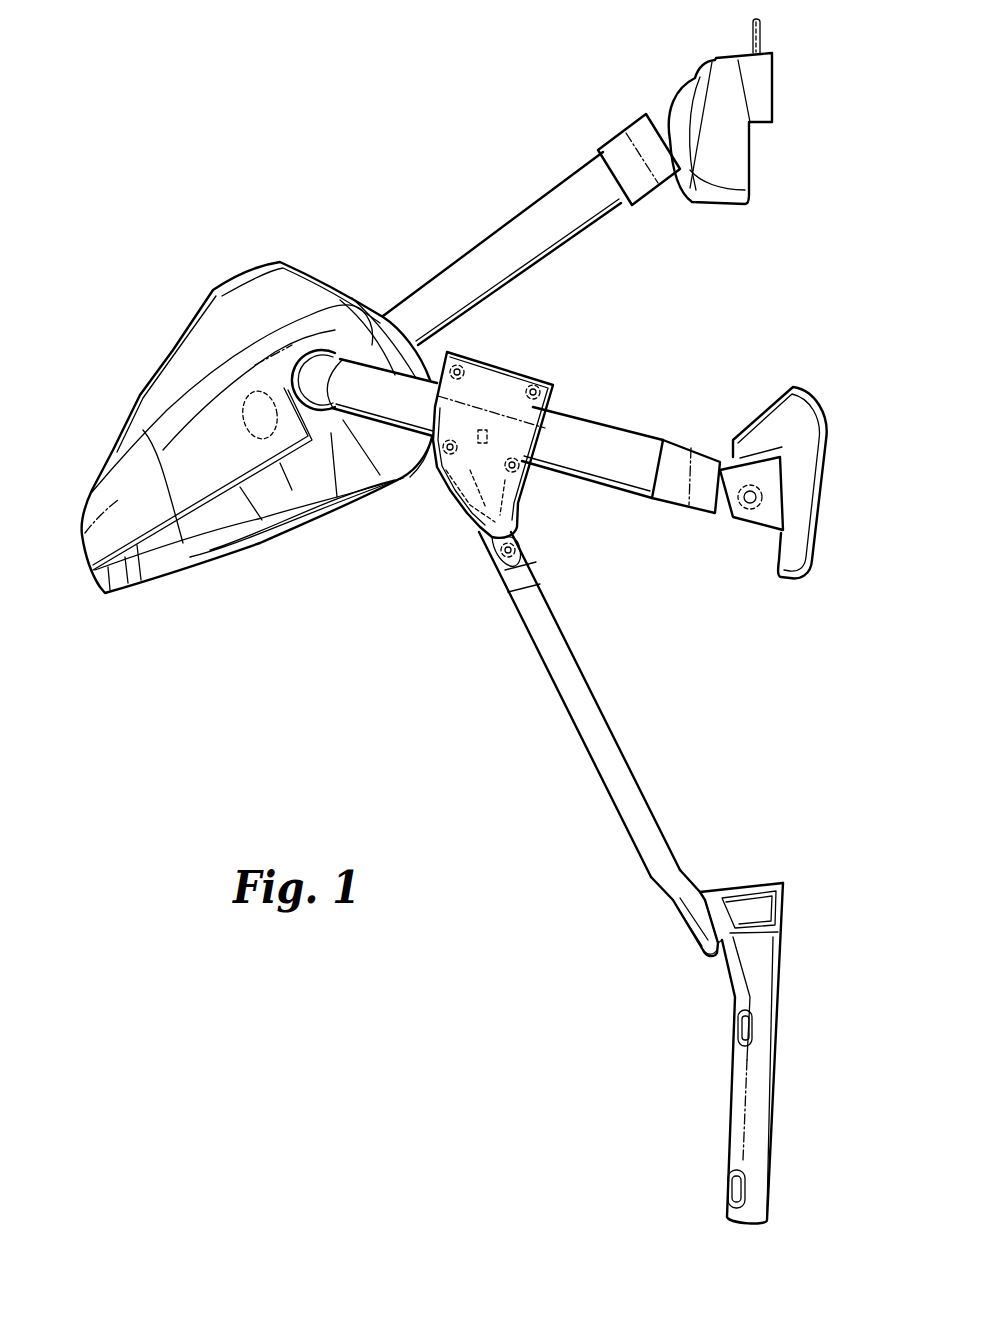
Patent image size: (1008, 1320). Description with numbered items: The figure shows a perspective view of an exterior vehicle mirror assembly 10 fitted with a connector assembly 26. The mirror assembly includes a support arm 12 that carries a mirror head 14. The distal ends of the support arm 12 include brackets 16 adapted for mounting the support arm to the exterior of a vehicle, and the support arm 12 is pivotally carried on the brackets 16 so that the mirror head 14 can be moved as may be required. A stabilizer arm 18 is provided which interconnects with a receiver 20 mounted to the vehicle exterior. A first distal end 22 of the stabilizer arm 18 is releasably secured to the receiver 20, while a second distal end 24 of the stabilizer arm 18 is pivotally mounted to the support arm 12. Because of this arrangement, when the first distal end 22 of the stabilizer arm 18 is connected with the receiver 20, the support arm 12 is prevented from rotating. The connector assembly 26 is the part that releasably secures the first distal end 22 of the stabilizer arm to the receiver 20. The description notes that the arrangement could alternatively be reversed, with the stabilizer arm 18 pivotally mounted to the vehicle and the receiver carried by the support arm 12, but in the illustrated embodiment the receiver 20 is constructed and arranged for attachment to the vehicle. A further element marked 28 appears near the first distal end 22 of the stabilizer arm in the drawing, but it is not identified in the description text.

The exterior vehicle mirror assembly 10 is at (237, 272).
The support arm 12 is at (440, 268).
The mirror head 14 is at (140, 393).
The brackets 16 is at (678, 82).
The stabilizer arm 18 is at (550, 672).
The receiver 20 is at (755, 1090).
The first distal end 22 is at (668, 927).
The second distal end 24 is at (510, 363).
The connector assembly 26 is at (702, 878).
The pivot end 28 is at (703, 955).